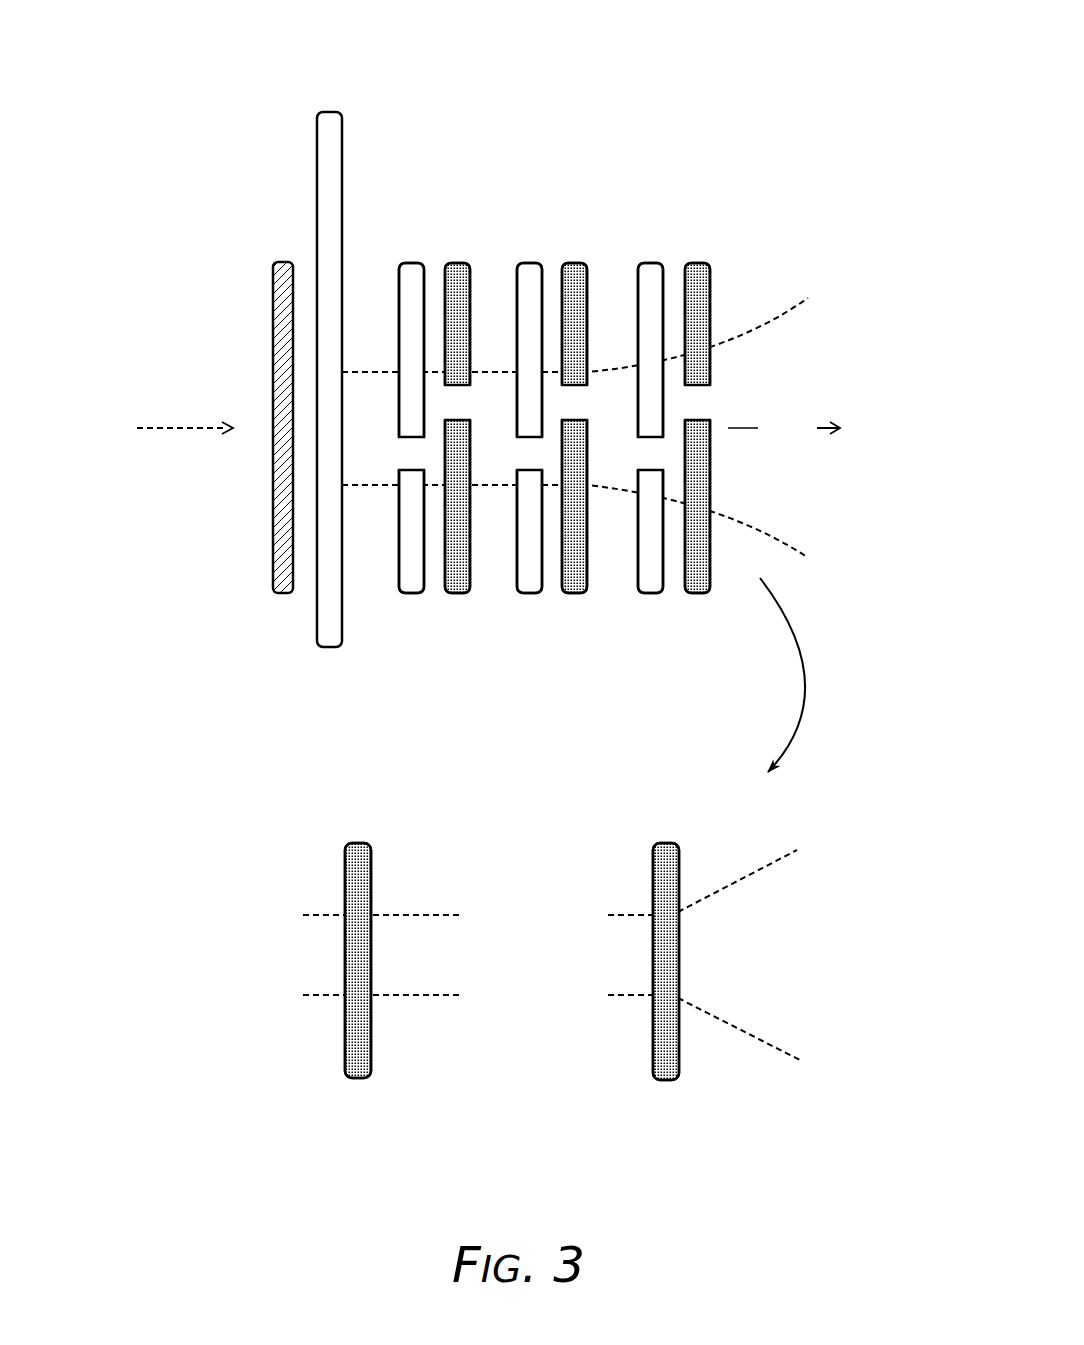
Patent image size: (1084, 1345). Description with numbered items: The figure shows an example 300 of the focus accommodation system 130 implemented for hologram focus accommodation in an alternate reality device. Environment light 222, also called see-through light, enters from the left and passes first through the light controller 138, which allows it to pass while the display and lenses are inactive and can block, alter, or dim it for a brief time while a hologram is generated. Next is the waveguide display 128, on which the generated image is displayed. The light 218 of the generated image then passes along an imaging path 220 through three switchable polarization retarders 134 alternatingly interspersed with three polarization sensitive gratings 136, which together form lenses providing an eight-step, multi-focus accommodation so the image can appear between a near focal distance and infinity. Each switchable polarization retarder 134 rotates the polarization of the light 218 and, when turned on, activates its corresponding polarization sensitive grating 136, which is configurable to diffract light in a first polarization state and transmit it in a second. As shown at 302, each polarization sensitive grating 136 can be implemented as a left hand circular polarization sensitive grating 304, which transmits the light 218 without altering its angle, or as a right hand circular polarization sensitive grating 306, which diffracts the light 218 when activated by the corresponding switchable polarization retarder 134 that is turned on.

The example 300 is at (672, 76).
The waveguide display 128 is at (331, 112).
The light controller 138 is at (281, 262).
The focus accommodation system 130 is at (754, 237).
The switchable polarization retarder 134 is at (405, 262).
The polarization sensitive grating 136 is at (453, 262).
The environment light 222 is at (165, 416).
The imaging path 220 is at (769, 440).
The light of the generated image 218 is at (759, 531).
The polarization sensitive grating illustration 302 is at (542, 766).
The left hand circular polarization sensitive grating 304 is at (359, 843).
The right hand circular polarization sensitive grating 306 is at (666, 843).